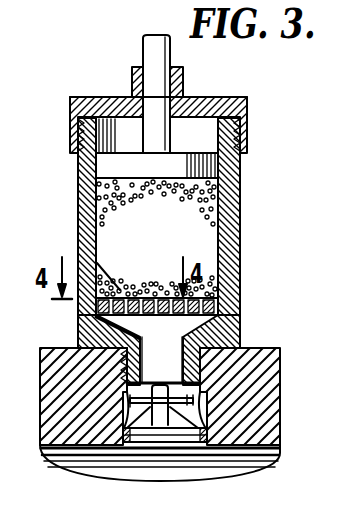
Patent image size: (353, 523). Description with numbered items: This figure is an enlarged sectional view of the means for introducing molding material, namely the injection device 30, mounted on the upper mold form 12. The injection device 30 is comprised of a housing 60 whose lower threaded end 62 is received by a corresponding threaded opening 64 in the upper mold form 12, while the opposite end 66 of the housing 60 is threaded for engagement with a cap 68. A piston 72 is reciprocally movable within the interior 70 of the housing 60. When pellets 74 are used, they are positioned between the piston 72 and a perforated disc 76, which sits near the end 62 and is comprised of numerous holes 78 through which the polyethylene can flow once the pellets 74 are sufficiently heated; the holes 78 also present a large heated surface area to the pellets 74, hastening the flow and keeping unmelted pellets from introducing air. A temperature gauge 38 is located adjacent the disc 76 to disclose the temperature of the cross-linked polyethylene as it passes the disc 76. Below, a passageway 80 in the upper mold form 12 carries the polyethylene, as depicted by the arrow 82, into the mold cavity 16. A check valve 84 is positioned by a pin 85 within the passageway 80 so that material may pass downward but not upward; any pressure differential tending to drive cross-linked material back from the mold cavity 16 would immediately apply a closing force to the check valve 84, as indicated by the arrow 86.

The injection device 30 is at (85, 92).
The cap 68 is at (215, 97).
The opposite end of the housing 66 is at (247, 132).
The housing 60 is at (242, 168).
The piston 72 is at (100, 168).
The interior of the housing 70 is at (219, 212).
The pellets 74 is at (100, 208).
The holes 78 is at (97, 270).
The perforated disc 76 is at (203, 287).
The temperature gauge 38 is at (220, 307).
The threaded opening 64 is at (112, 342).
The upper mold form 12 is at (258, 398).
The threaded end 62 is at (200, 360).
The passageway 80 is at (128, 386).
The arrow 86 is at (160, 443).
The pin 85 is at (193, 388).
The check valve 84 is at (175, 442).
The mold cavity 16 is at (256, 452).
The arrow 82 is at (92, 475).